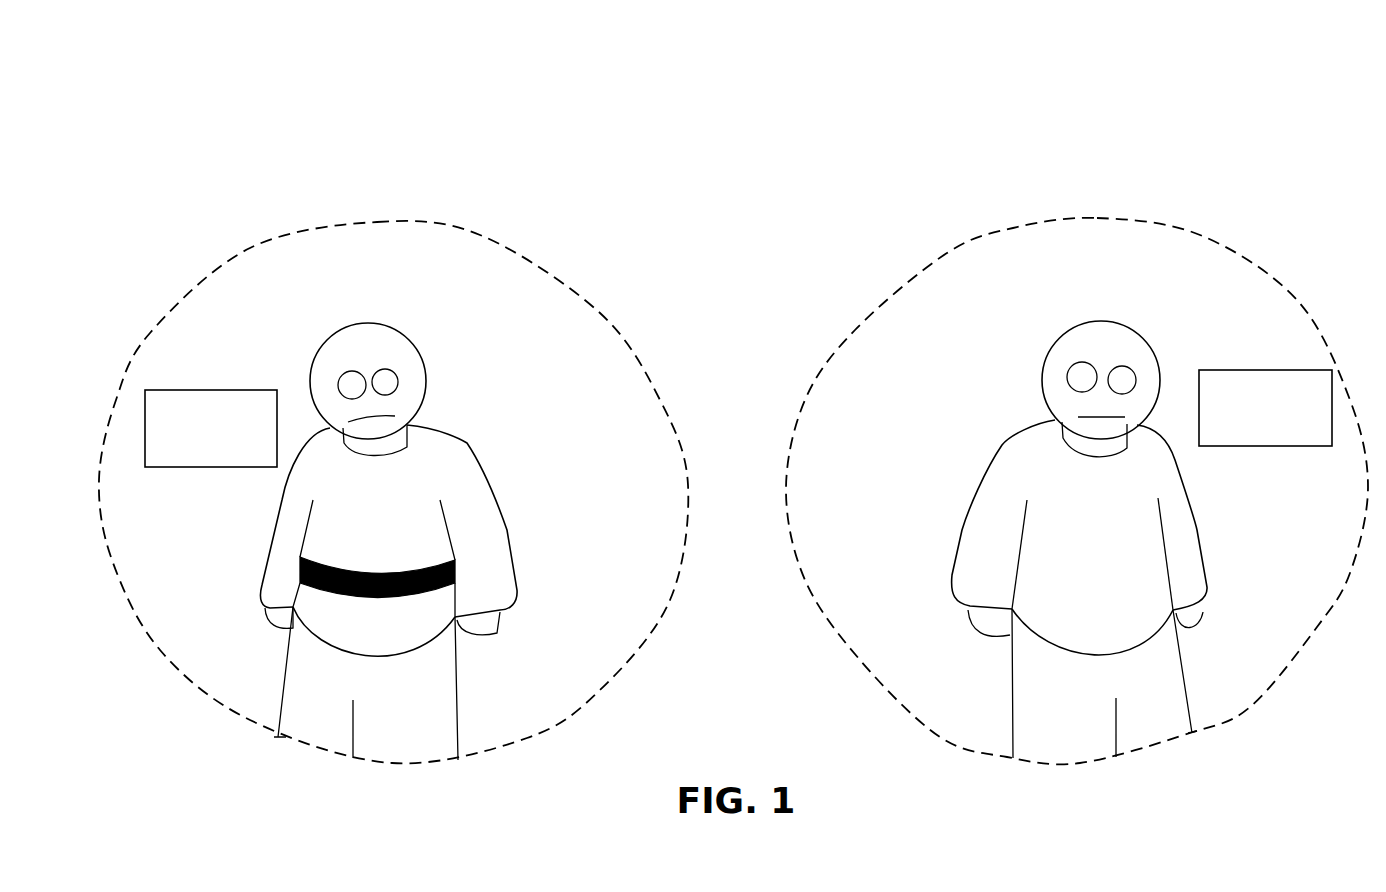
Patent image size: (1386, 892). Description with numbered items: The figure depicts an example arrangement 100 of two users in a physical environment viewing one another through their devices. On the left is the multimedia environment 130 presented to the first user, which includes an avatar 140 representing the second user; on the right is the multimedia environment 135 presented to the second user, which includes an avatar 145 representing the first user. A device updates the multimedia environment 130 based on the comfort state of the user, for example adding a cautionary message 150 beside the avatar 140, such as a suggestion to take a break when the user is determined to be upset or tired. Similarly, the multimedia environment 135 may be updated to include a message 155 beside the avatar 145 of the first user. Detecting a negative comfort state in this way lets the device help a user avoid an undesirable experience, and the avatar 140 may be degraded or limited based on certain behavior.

The system environment 100 is at (229, 112).
The multimedia environment 130 is at (295, 294).
The multimedia environment 135 is at (1218, 341).
The avatar 140 is at (418, 352).
The avatar 145 is at (1050, 348).
The message 150 is at (208, 467).
The message 155 is at (1265, 446).